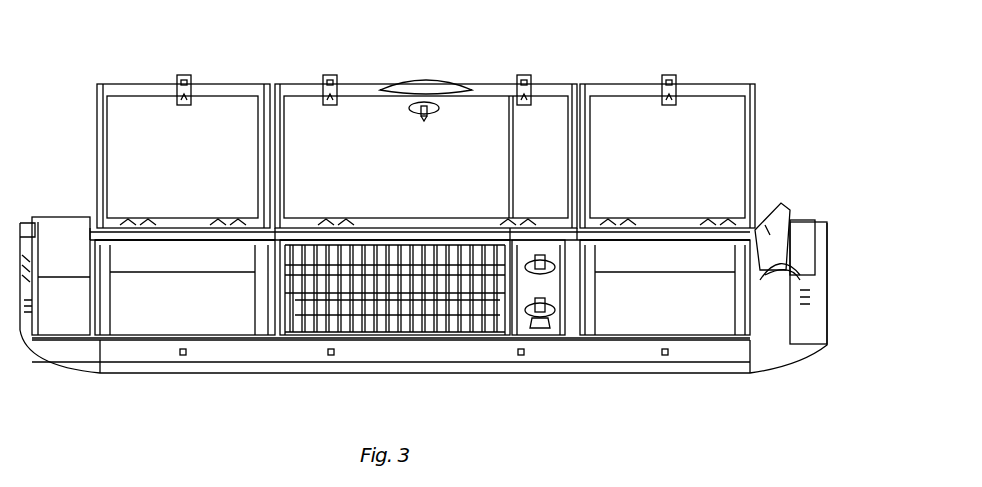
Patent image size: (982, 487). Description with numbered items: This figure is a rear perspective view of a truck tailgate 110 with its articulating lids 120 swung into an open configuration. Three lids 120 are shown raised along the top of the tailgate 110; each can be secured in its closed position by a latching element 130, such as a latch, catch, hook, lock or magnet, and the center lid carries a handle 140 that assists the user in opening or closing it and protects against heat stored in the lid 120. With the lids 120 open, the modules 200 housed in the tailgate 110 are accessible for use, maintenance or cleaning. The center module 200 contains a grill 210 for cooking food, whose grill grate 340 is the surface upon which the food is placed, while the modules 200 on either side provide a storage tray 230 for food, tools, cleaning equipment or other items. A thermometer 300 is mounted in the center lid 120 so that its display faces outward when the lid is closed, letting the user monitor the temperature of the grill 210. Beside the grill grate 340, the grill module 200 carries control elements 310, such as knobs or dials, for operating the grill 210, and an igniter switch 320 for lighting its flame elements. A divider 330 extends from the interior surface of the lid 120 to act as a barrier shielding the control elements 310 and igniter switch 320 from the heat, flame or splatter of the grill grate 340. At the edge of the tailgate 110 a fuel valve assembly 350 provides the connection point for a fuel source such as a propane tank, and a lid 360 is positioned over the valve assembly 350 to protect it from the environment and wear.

The tailgate 110 is at (710, 365).
The articulating lid 120 is at (232, 82).
The latching element 130 is at (180, 75).
The handle 140 is at (430, 80).
The module 200 is at (128, 252).
The grill 210 is at (380, 310).
The storage tray 230 is at (222, 322).
The thermometer 300 is at (426, 122).
The control element 310 is at (546, 262).
The igniter switch 320 is at (548, 326).
The divider 330 is at (513, 158).
The grill grate 340 is at (445, 333).
The fuel valve assembly 350 is at (810, 222).
The lid 360 is at (760, 225).